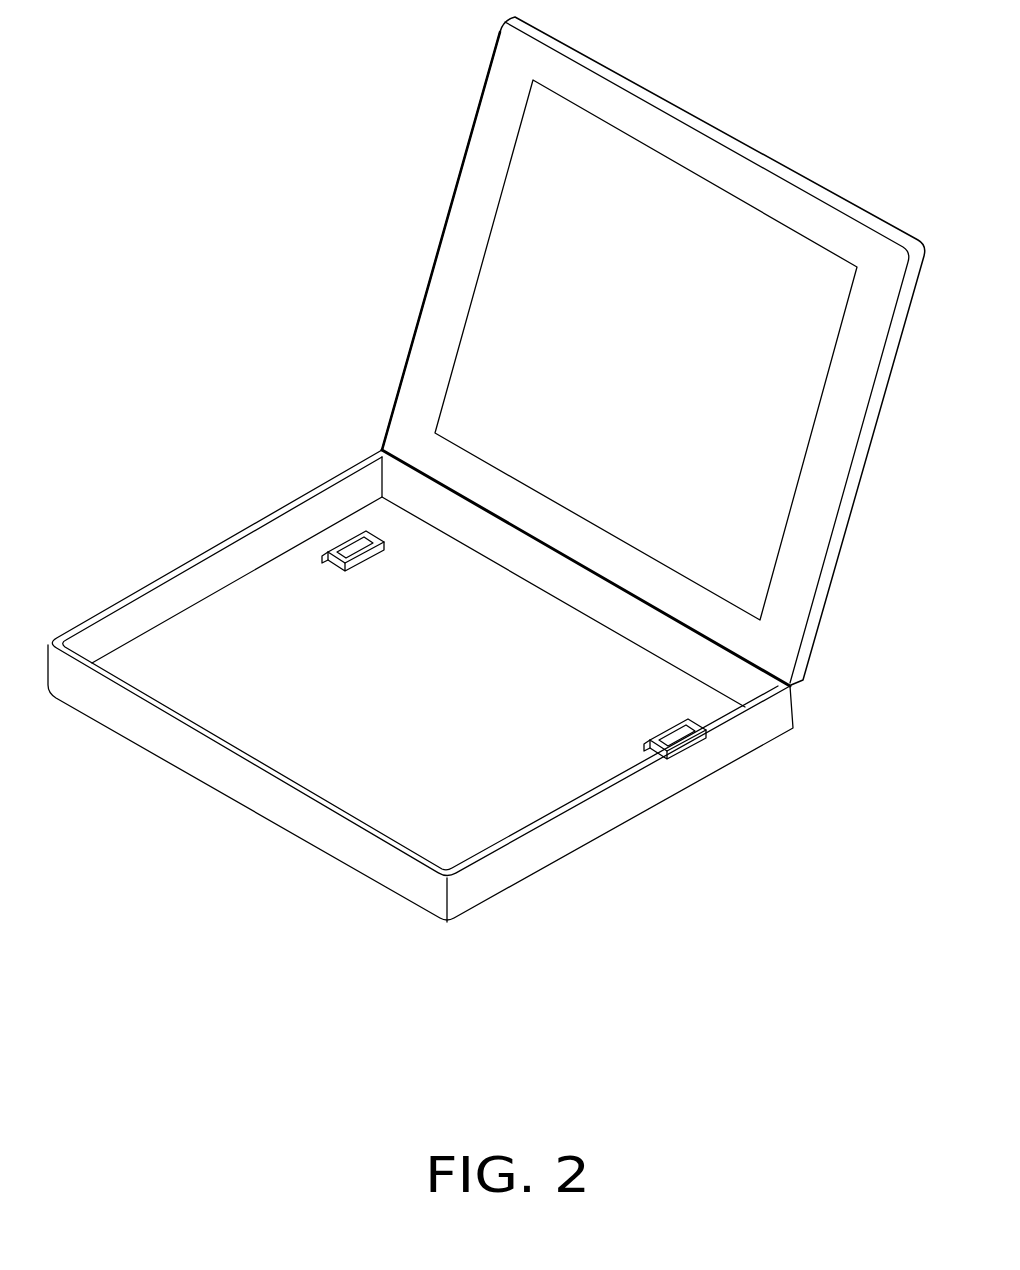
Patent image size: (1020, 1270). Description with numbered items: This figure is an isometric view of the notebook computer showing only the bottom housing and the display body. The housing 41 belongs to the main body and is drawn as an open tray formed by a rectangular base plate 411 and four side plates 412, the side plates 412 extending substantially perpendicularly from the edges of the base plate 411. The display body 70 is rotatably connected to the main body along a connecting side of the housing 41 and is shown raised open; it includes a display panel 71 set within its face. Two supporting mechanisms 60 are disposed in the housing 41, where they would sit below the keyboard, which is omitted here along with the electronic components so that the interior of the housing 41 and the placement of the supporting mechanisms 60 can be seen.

The housing 41 is at (420, 759).
The base plate 411 is at (488, 828).
The side plates 412 is at (412, 880).
The supporting mechanisms 60 is at (347, 553).
The display body 70 is at (482, 202).
The display panel 71 is at (480, 365).